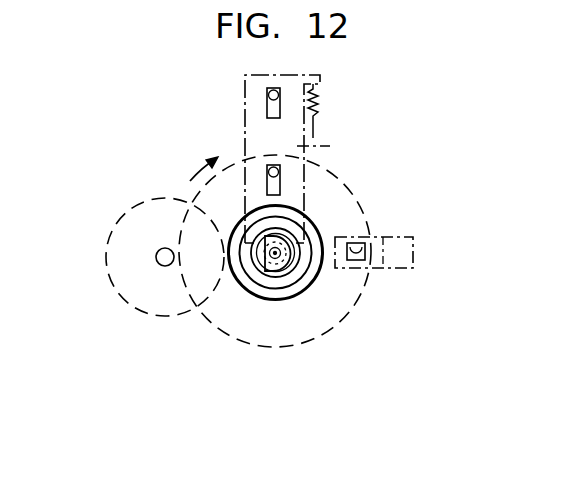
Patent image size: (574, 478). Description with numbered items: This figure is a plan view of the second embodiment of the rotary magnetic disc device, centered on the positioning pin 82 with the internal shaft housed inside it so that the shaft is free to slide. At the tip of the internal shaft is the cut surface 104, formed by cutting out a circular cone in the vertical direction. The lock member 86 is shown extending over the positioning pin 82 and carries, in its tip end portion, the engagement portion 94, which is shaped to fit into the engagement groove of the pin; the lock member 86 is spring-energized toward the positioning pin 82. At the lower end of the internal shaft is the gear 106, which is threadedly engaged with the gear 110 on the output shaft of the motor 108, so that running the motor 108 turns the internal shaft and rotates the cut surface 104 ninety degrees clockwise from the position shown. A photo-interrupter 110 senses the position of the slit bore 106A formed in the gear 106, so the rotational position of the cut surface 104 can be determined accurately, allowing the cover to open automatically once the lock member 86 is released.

The positioning pin 82 is at (305, 298).
The lock member 86 is at (330, 146).
The engagement portion 94 is at (297, 225).
The cut surface 104 is at (267, 258).
The gear 106 is at (278, 352).
The slit bore 106A is at (368, 245).
The motor 108 is at (156, 316).
The gear / photo-interrupter 110 is at (156, 257).